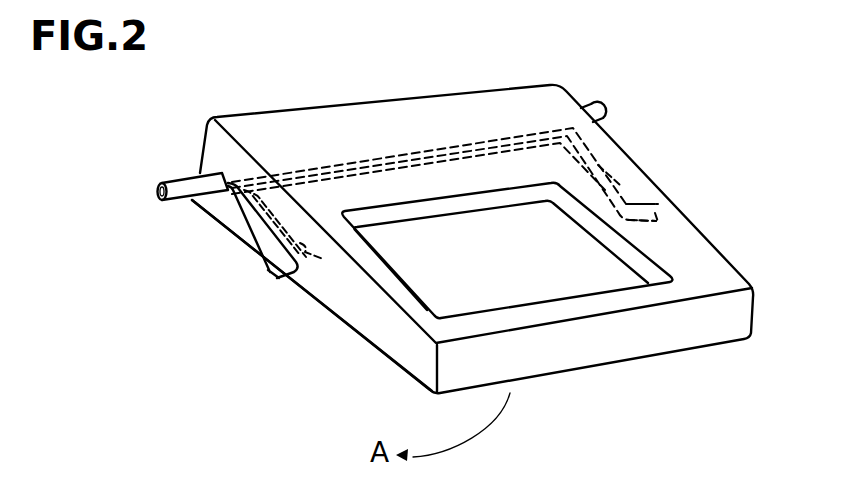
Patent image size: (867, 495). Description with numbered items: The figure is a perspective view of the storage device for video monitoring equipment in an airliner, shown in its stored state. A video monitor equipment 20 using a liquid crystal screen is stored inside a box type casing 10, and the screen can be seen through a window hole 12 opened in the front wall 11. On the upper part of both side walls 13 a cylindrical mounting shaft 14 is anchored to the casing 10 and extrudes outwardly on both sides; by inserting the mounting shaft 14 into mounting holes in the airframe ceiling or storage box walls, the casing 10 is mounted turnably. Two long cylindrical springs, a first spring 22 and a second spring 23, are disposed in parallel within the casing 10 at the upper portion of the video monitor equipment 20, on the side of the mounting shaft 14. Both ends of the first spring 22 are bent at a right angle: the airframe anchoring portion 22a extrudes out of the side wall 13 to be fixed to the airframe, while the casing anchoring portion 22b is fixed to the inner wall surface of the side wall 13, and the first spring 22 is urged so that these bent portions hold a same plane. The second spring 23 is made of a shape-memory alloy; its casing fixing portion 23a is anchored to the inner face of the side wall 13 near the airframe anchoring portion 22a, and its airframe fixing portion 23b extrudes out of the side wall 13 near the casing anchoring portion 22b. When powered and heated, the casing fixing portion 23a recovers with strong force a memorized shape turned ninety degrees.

The casing 10 is at (275, 95).
The front wall 11 is at (717, 267).
The window hole 12 is at (430, 295).
The side wall 13 is at (353, 320).
The mounting shaft 14 is at (186, 178).
The video monitor equipment 20 is at (603, 280).
The first spring 22 is at (395, 153).
The airframe anchoring portion 22a is at (263, 235).
The casing anchoring portion 22b is at (607, 157).
The second spring 23 is at (470, 157).
The casing fixing portion 23a is at (301, 244).
The airframe fixing portion 23b is at (633, 207).